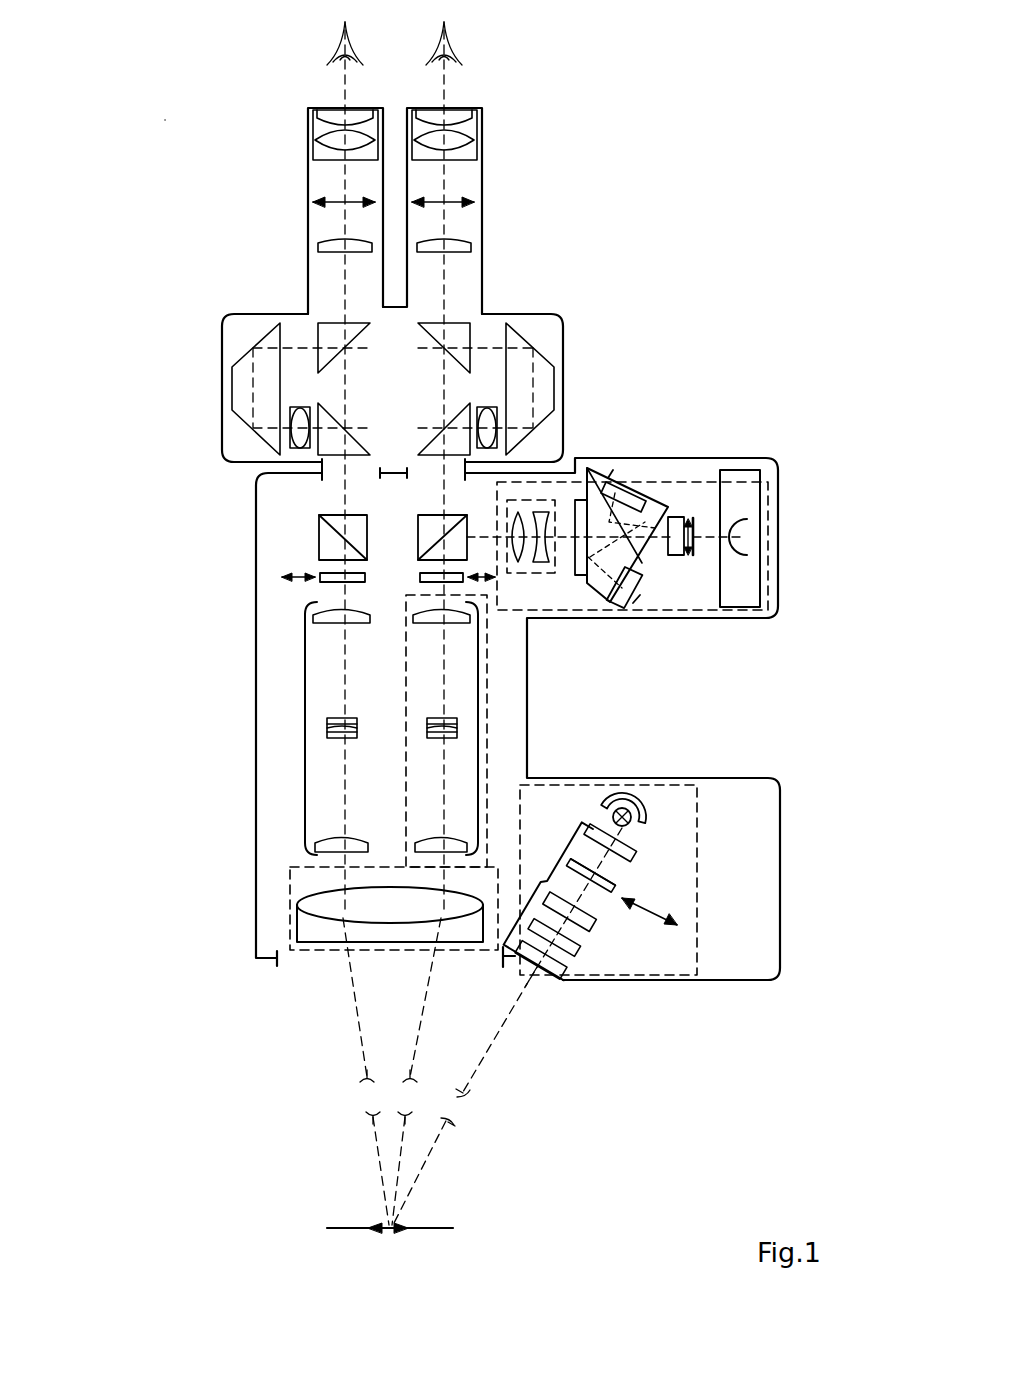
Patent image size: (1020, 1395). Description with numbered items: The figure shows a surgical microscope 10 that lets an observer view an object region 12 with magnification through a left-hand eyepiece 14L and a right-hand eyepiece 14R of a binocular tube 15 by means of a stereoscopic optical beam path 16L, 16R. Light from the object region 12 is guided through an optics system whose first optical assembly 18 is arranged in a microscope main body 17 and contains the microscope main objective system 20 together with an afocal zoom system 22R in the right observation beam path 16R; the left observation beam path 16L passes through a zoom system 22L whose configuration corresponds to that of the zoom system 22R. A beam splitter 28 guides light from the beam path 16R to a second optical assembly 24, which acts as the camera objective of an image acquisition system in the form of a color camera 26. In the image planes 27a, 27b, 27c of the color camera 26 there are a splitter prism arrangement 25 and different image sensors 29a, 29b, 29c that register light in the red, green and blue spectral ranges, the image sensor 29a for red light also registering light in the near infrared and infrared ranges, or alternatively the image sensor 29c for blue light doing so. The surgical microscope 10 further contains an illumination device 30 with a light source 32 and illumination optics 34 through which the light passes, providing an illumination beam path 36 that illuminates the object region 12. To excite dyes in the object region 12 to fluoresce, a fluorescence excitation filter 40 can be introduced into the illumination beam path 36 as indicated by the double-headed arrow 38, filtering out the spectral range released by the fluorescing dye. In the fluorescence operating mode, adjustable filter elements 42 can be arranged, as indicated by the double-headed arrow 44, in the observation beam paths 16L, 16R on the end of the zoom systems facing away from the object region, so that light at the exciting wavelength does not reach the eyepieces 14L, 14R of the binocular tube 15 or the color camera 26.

The surgical microscope 10 is at (162, 128).
The object region 12 is at (432, 1228).
The left-hand eyepiece 14L is at (313, 108).
The right-hand eyepiece 14R is at (478, 108).
The binocular tube 15 is at (564, 350).
The left observation beam path 16L is at (340, 80).
The right observation beam path 16R is at (447, 80).
The microscope main body 17 is at (256, 735).
The first optical assembly 18 is at (287, 907).
The microscope main objective system 20 is at (303, 900).
The zoom system 22L is at (303, 723).
The afocal zoom system 22R is at (480, 718).
The second optical assembly 24 is at (555, 605).
The splitter prism arrangement 25 is at (672, 505).
The color camera 26 is at (500, 610).
The image plane 27a is at (623, 600).
The image plane 27b is at (672, 556).
The image plane 27c is at (647, 505).
The beam splitter 28 is at (418, 515).
The image sensor 29a is at (633, 597).
The image sensor 29b is at (694, 522).
The image sensor 29c is at (612, 482).
The illumination device 30 is at (697, 823).
The light source 32 is at (630, 822).
The illumination optics 34 is at (537, 878).
The illumination beam path 36 is at (512, 1010).
The double-headed arrow 38 is at (643, 910).
The fluorescence excitation filter 40 is at (613, 888).
The adjustable filter elements 42 is at (420, 573).
The double-headed arrow 44 is at (298, 582).